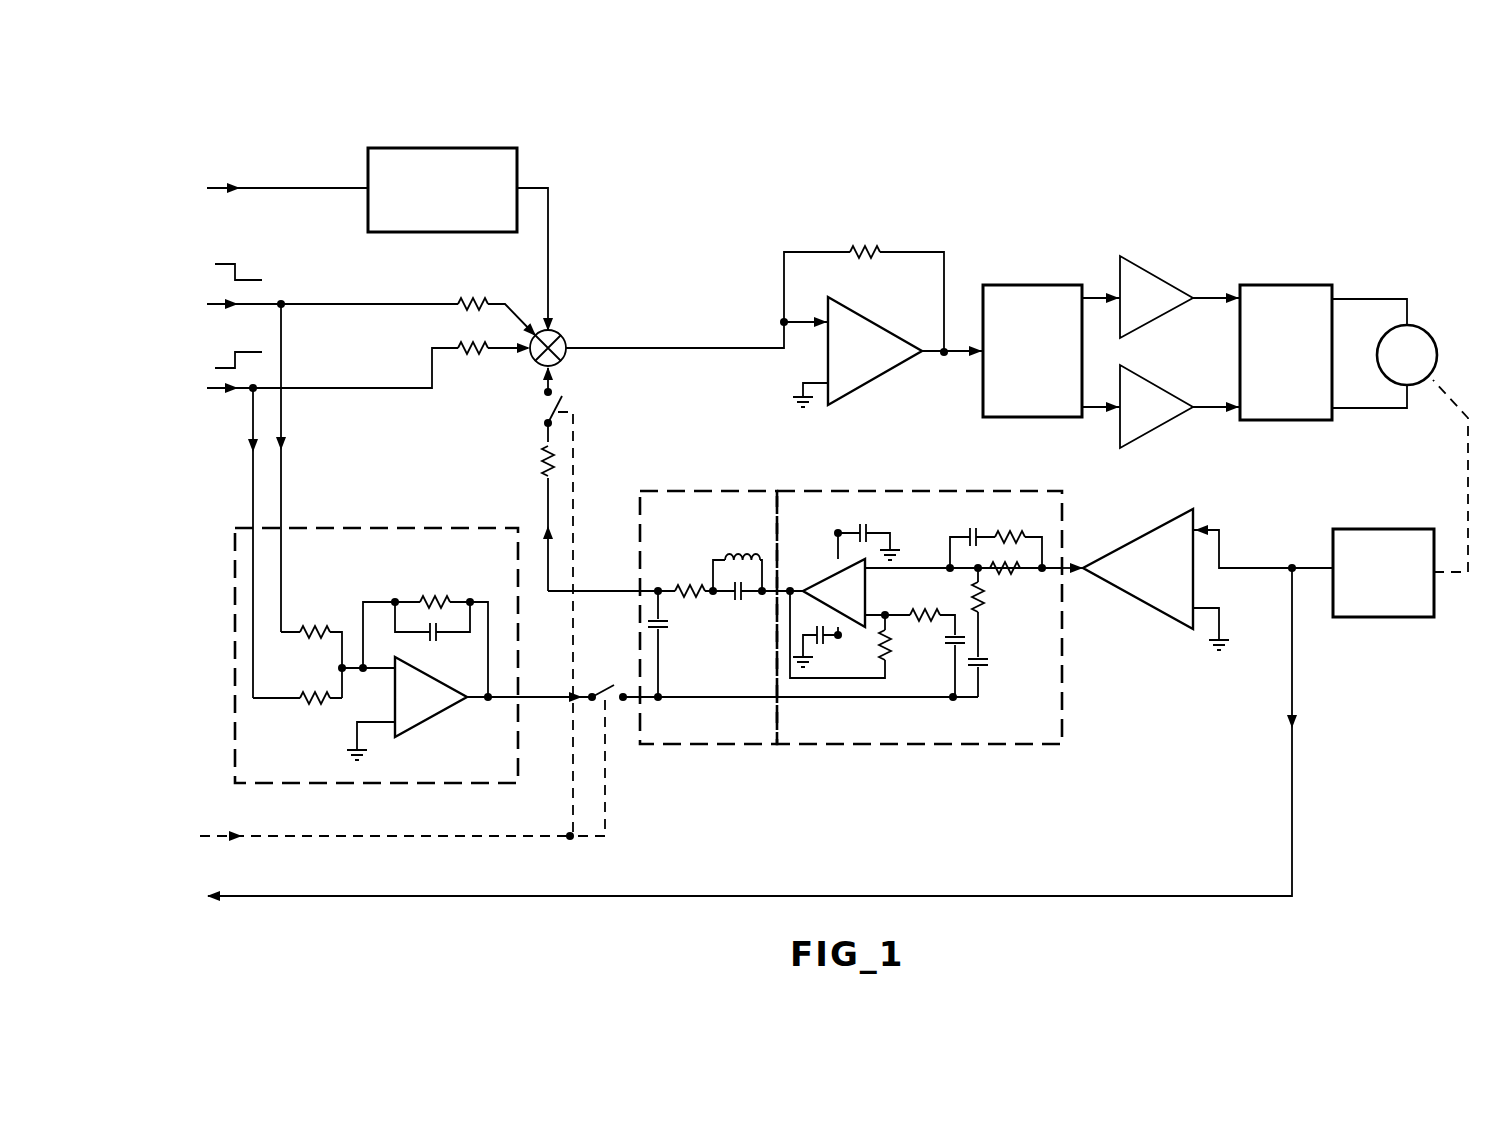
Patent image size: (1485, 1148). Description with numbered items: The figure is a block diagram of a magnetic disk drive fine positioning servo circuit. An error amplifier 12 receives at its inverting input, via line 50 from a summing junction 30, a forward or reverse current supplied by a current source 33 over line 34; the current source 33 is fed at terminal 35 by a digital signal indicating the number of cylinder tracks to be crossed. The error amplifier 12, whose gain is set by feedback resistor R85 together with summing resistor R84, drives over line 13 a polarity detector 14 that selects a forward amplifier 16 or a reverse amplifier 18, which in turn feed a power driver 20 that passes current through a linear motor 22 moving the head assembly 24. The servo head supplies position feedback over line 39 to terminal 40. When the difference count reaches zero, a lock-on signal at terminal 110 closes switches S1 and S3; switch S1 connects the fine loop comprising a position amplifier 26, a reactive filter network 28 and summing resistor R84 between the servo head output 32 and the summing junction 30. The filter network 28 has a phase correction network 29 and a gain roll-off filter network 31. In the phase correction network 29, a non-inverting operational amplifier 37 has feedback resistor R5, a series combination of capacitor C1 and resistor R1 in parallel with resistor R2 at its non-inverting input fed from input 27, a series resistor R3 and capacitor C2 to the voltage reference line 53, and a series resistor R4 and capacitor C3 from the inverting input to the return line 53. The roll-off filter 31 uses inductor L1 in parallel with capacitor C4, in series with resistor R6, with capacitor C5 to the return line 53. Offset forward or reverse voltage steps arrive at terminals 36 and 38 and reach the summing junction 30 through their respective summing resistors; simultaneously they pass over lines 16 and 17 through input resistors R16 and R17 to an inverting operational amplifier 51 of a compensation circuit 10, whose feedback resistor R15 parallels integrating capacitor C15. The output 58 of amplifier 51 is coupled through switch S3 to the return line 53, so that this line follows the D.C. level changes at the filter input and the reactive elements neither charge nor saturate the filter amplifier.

The compensation circuit 10 is at (376, 655).
The error amplifier 12 is at (864, 320).
The output line of error amplifier 13 is at (956, 350).
The polarity detector 14 is at (1047, 284).
The forward amplifier 16 is at (283, 412).
The line 17 is at (253, 490).
The reverse amplifier 18 is at (1157, 394).
The power driver 20 is at (1296, 284).
The linear motor 22 is at (1386, 334).
The head assembly 24 is at (1408, 528).
The position amplifier 26 is at (1148, 540).
The input of filter 27 is at (1058, 576).
The reactive filter network 28 is at (1068, 706).
The phase correction network 29 is at (919, 617).
The summing junction 30 is at (562, 337).
The gain roll-off filter network 31 is at (675, 617).
The servo head output 32 is at (1307, 566).
The current source 33 is at (453, 152).
The line 34 is at (544, 186).
The terminal 35 is at (211, 188).
The input terminal 36 is at (213, 302).
The non-inverting operational amplifier 37 is at (826, 583).
The input terminal 38 is at (212, 391).
The line 39 is at (919, 893).
The terminal 40 is at (241, 893).
The line 50 is at (757, 291).
The inverting operational amplifier 51 is at (438, 692).
The voltage reference line 53 is at (708, 695).
The output of amplifier 51 58 is at (541, 695).
The terminal 110 is at (252, 834).
The switch S1 is at (565, 612).
The switch S3 is at (598, 752).
The summing resistor R84 is at (531, 507).
The feedback resistor R85 is at (866, 242).
The feedback resistor R15 is at (425, 636).
The input resistor R16 is at (311, 652).
The input resistor R17 is at (297, 690).
The feedback capacitor C15 is at (432, 632).
The resistor R6 is at (689, 581).
The capacitor C4 is at (739, 602).
The capacitor C5 is at (669, 644).
The inductor L1 is at (737, 563).
The resistor R1 is at (1018, 541).
The resistor R2 is at (1005, 559).
The resistor R3 is at (990, 612).
The resistor R4 is at (932, 611).
The feedback resistor R5 is at (852, 634).
The capacitor C1 is at (972, 537).
The capacitor C2 is at (990, 676).
The capacitor C3 is at (943, 663).